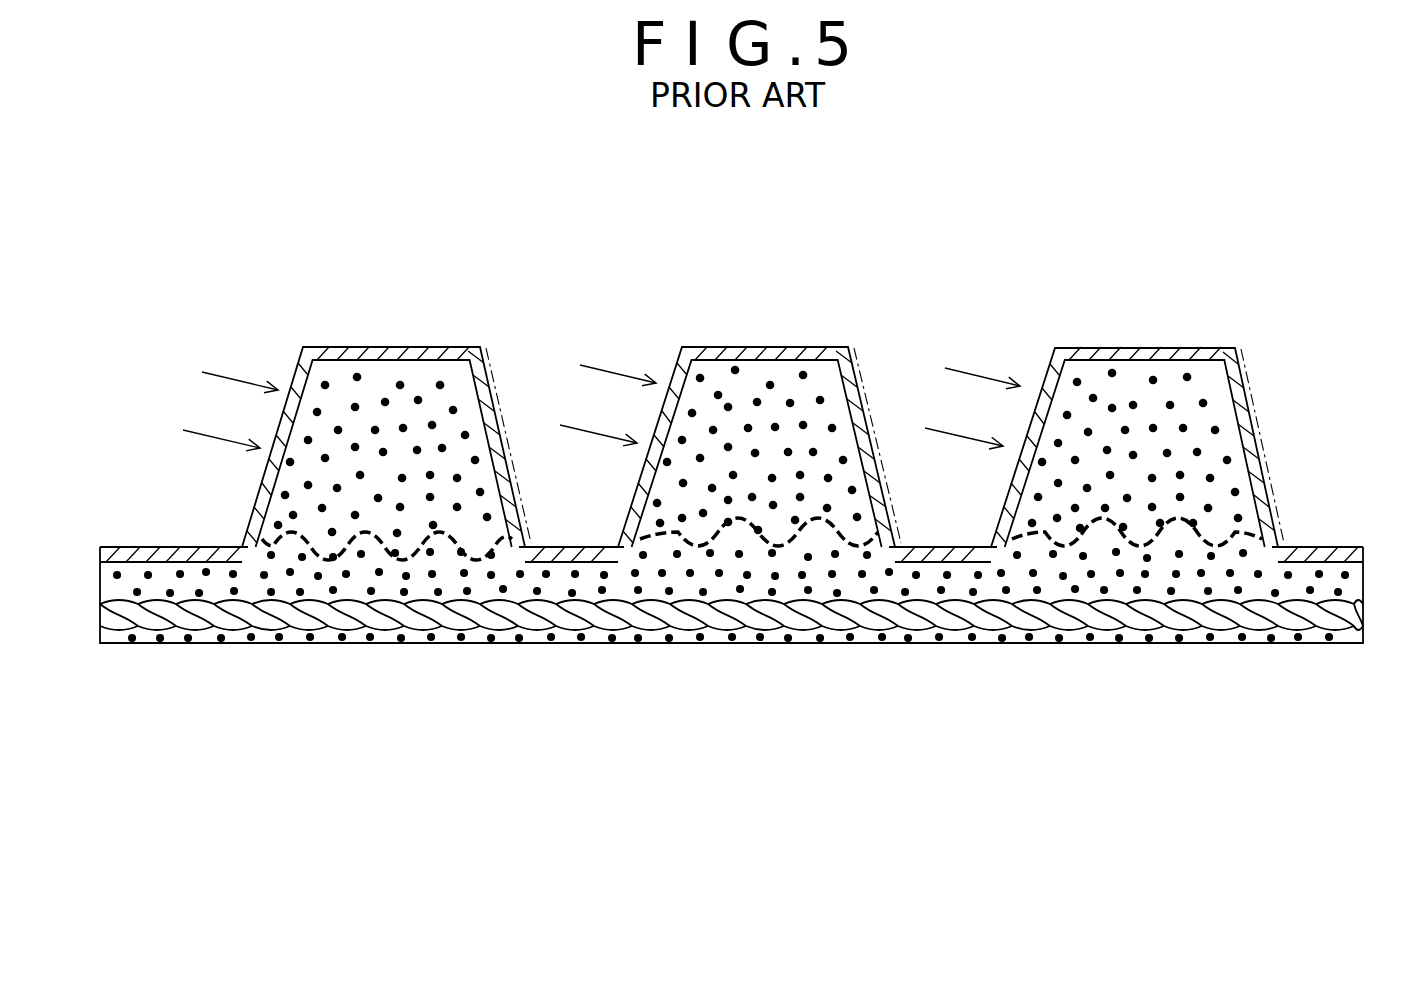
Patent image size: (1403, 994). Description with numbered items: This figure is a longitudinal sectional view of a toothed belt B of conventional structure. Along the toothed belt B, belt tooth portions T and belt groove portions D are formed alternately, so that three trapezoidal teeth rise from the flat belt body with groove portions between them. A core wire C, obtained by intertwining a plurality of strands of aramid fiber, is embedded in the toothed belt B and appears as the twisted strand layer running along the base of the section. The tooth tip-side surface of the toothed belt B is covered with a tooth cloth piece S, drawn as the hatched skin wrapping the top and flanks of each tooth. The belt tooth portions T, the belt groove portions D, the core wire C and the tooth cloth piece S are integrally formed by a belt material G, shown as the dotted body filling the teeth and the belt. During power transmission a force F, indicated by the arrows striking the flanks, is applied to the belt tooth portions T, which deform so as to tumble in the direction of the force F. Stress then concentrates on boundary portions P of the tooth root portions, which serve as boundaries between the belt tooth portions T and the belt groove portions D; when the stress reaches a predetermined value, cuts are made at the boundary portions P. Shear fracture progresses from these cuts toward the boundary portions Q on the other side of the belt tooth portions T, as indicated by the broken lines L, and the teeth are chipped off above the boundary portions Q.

The toothed belt B is at (1035, 298).
The belt tooth portion T is at (384, 347).
The tooth cloth piece S is at (303, 347).
The belt material G is at (407, 412).
The force F is at (601, 406).
The boundary portion of tooth root portion P is at (240, 545).
The belt groove portion D is at (538, 547).
The broken line L is at (400, 556).
The boundary portion on the other side Q is at (520, 560).
The core wire C is at (627, 620).